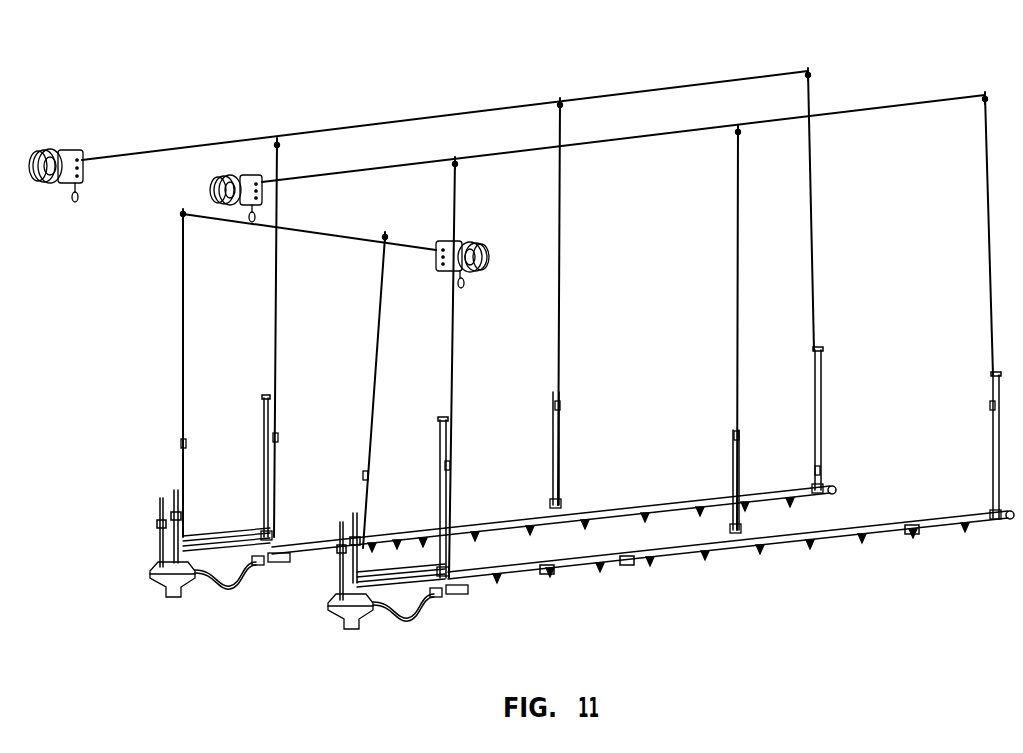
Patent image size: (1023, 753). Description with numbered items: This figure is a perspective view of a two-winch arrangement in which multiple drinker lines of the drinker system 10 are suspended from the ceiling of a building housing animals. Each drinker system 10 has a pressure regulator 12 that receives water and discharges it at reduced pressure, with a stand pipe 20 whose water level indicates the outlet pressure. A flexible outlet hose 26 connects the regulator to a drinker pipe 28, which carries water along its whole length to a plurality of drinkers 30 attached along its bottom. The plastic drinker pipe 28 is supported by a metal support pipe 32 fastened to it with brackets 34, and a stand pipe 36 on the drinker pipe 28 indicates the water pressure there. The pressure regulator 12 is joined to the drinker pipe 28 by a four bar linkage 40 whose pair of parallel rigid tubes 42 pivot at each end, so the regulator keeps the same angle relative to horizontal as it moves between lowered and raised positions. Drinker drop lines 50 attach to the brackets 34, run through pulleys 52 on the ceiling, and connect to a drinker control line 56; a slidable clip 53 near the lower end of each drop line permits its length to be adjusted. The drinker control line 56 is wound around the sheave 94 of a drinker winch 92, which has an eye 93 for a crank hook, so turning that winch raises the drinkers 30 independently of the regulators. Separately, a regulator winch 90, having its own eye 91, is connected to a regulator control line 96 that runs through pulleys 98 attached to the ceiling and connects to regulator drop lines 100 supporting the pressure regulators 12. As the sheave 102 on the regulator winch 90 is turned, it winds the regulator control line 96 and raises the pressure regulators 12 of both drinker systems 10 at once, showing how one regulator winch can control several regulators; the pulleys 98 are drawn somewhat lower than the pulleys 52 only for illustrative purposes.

The drinker system 10 is at (888, 636).
The pressure regulator 12 is at (150, 578).
The stand pipe 20 is at (160, 498).
The flexible outlet hose 26 is at (226, 589).
The drinker pipe 28 is at (834, 489).
The drinkers 30 is at (550, 580).
The support pipe 32 is at (645, 522).
The brackets 34 is at (557, 499).
The stand pipe 36 is at (262, 398).
The four bar linkage 40 is at (210, 528).
The tubes 42 is at (256, 567).
The drinker drop lines 50 is at (277, 330).
The pulleys 52 is at (280, 144).
The slidable clip 53 is at (181, 443).
The drinker control line 56 is at (412, 122).
The regulator winch 90 is at (441, 266).
The eye 91 is at (468, 285).
The drinker winch 92 is at (68, 150).
The eye 93 is at (78, 203).
The sheave 94 is at (48, 186).
The regulator control line 96 is at (322, 236).
The pulleys 98 is at (186, 218).
The regulator drop lines 100 is at (183, 333).
The sheave 102 is at (485, 253).